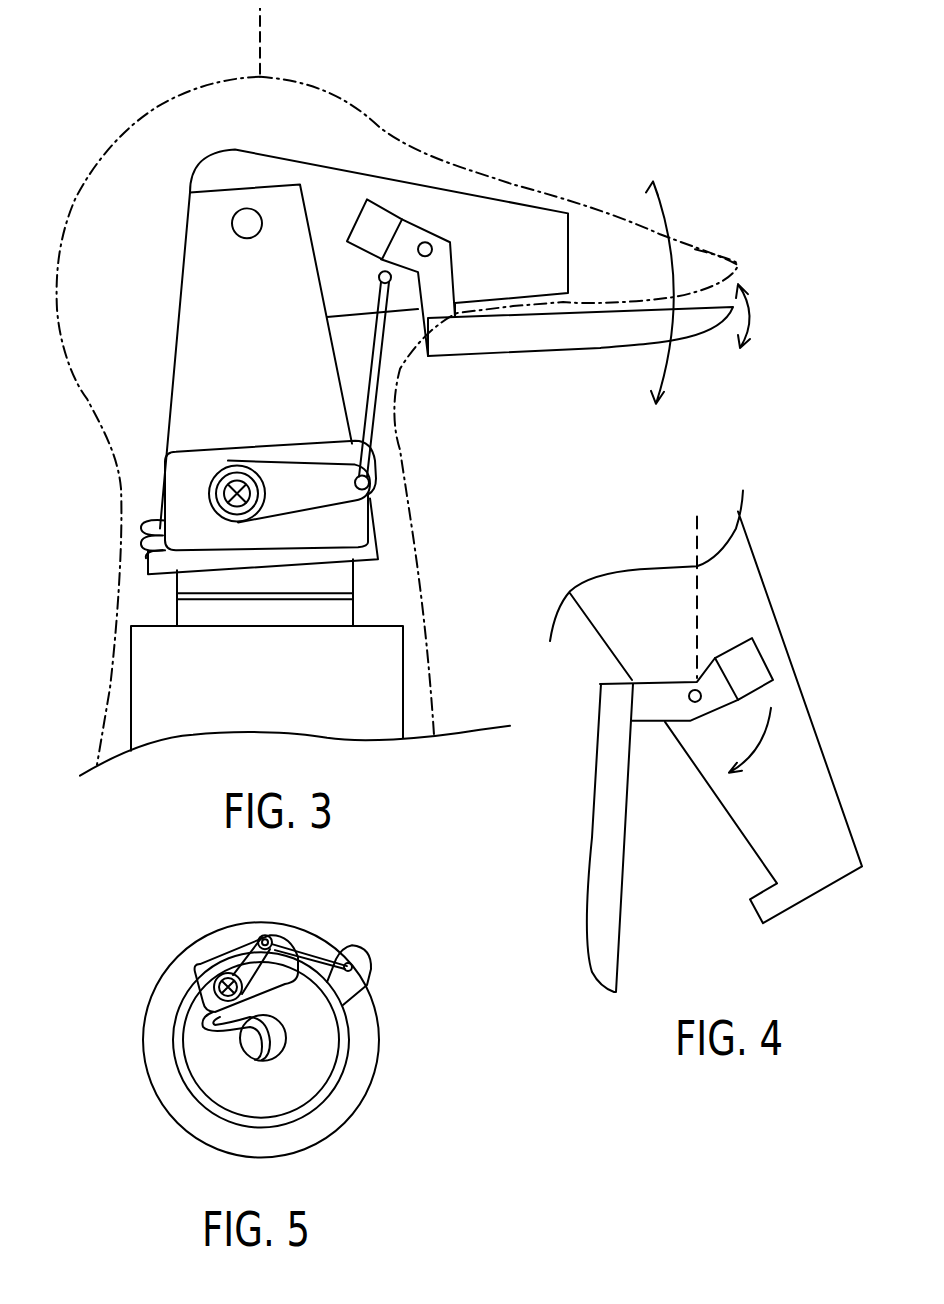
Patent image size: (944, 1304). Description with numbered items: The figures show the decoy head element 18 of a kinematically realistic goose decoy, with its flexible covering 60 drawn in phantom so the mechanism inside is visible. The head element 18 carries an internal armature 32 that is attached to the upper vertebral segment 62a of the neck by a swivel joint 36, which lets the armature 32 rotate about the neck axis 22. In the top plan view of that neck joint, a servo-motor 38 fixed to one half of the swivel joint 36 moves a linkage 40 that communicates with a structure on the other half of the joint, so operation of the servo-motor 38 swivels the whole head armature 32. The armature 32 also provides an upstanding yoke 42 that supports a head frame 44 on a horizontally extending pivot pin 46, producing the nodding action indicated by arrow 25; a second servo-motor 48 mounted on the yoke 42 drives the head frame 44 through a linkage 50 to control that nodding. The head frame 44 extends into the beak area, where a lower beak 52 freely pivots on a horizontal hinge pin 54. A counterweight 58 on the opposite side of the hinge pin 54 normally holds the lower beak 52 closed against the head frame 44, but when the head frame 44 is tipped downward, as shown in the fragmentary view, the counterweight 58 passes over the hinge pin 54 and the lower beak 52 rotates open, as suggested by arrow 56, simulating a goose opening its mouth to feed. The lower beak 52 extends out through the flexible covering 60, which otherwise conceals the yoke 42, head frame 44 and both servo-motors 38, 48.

In FIG. 3, the head element 18 is at (467, 38).
In FIG. 3, the neck axis 22 is at (264, 19).
In FIG. 3, the nodding action arrow 25 is at (663, 220).
In FIG. 3, the internal armature 32 is at (72, 244).
In FIG. 3, the swivel joint 36 is at (185, 620).
In FIG. 5, the swivel joint 36 is at (378, 1052).
In FIG. 5, the servo-motor 38 is at (205, 967).
In FIG. 5, the linkage 40 is at (270, 940).
In FIG. 3, the upstanding yoke 42 is at (193, 307).
In FIG. 3, the head frame 44 is at (510, 217).
In FIG. 4, the head frame 44 is at (747, 590).
In FIG. 3, the pivot pin 46 is at (242, 220).
In FIG. 3, the servo-motor 48 is at (193, 460).
In FIG. 3, the linkage 50 is at (374, 385).
In FIG. 3, the lower beak 52 is at (688, 333).
In FIG. 4, the lower beak 52 is at (608, 837).
In FIG. 3, the hinge pin 54 is at (432, 248).
In FIG. 4, the hinge pin 54 is at (694, 702).
In FIG. 3, the rotation arrow 56 is at (752, 315).
In FIG. 3, the counterweight 58 is at (375, 222).
In FIG. 4, the counterweight 58 is at (750, 673).
In FIG. 3, the flexible covering 60 is at (705, 250).
In FIG. 3, the upper vertebral segment 62a is at (380, 677).